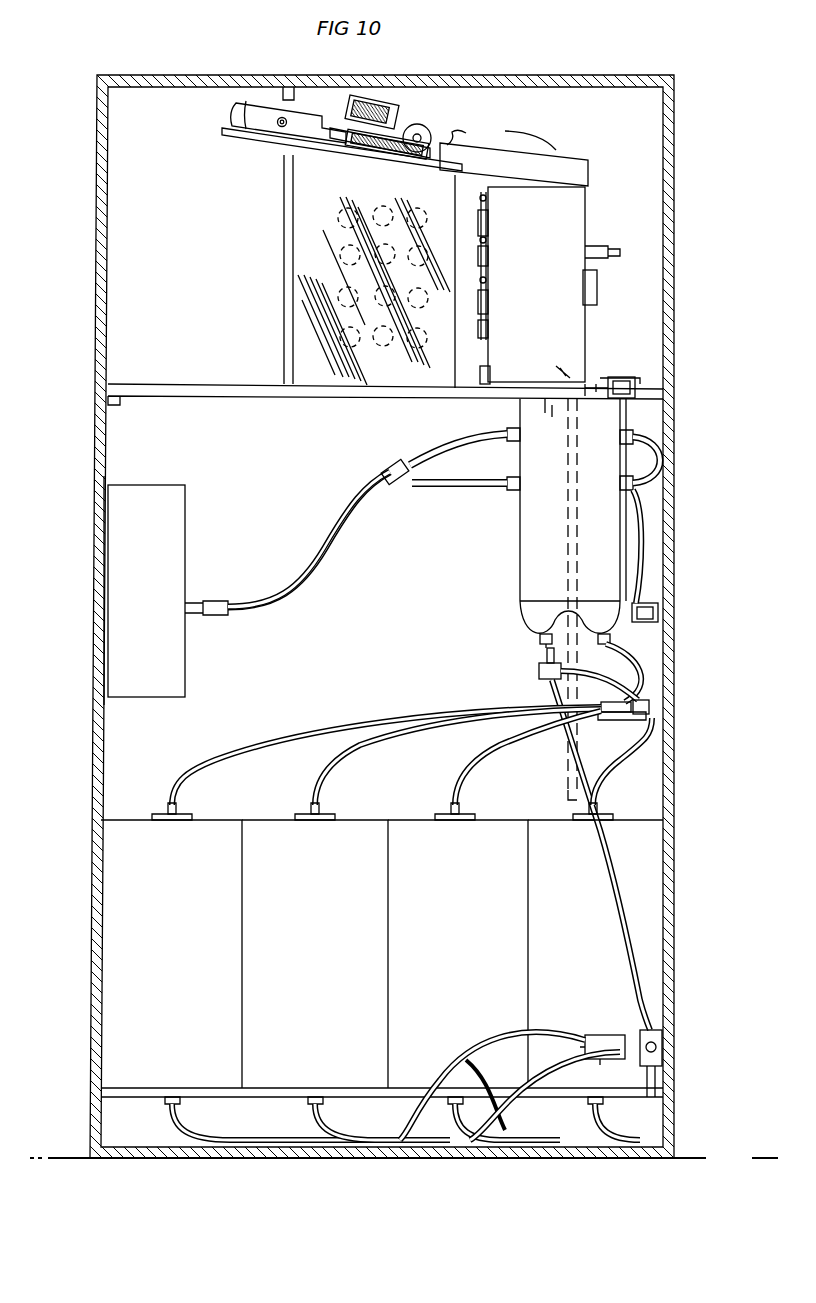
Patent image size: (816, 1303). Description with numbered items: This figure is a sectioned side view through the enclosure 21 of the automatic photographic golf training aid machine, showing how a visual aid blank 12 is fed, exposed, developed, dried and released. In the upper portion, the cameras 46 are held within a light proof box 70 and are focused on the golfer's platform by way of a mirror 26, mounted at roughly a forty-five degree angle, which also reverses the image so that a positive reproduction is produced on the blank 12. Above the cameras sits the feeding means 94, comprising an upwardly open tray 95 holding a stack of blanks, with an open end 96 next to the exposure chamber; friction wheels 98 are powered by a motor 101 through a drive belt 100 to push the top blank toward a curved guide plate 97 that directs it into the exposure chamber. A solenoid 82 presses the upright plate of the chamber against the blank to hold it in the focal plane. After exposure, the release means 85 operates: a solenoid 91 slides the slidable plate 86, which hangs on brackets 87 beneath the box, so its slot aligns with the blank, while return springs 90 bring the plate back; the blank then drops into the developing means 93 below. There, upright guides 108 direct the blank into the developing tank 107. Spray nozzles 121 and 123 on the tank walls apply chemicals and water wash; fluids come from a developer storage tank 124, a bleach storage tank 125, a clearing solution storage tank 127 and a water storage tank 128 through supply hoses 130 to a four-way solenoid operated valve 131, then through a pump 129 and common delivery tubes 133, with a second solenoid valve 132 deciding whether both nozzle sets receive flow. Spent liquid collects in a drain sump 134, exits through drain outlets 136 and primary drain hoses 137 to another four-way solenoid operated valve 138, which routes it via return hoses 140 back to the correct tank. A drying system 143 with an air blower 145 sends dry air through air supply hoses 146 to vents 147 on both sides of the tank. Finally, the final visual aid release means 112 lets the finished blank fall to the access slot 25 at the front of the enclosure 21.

The visual aid blank 12 is at (366, 150).
The enclosure 21 is at (84, 542).
The access slot 25 is at (565, 788).
The mirror 26 is at (300, 328).
The cameras 46 is at (490, 290).
The light proof box 70 is at (586, 219).
The solenoid 82 is at (604, 256).
The release means 85 is at (644, 376).
The slidable plate 86 is at (536, 385).
The brackets 87 is at (538, 411).
The return springs 90 is at (570, 372).
The solenoid 91 is at (638, 386).
The developing means 93 is at (518, 543).
The feeding means 94 is at (392, 116).
The tray 95 is at (292, 132).
The open end 96 is at (467, 131).
The curved guide plate 97 is at (536, 140).
The friction wheels 98 is at (424, 130).
The drive belt 100 is at (392, 158).
The motor 101 is at (366, 112).
The developing tank 107 is at (520, 575).
The upright guides 108 is at (568, 500).
The final visual aid release means 112 is at (658, 610).
The spray nozzles 121 is at (507, 484).
The spray nozzles 123 is at (636, 486).
The developer storage tank 124 is at (588, 927).
The bleach storage tank 125 is at (451, 927).
The clearing solution storage tank 127 is at (319, 941).
The water storage tank 128 is at (176, 941).
The pump 129 is at (584, 1046).
The supply hoses 130 is at (468, 1058).
The four-way solenoid operated valve 131 is at (664, 1038).
The second solenoid valve 132 is at (538, 672).
The common delivery tubes 133 is at (636, 546).
The drain sump 134 is at (540, 641).
The drain outlets 136 is at (650, 640).
The primary drain hoses 137 is at (648, 682).
The four-way solenoid operated valve 138 is at (650, 705).
The return hoses 140 is at (415, 733).
The drying system 143 is at (200, 530).
The air blower 145 is at (182, 572).
The air supply hoses 146 is at (318, 549).
The vents 147 is at (507, 432).